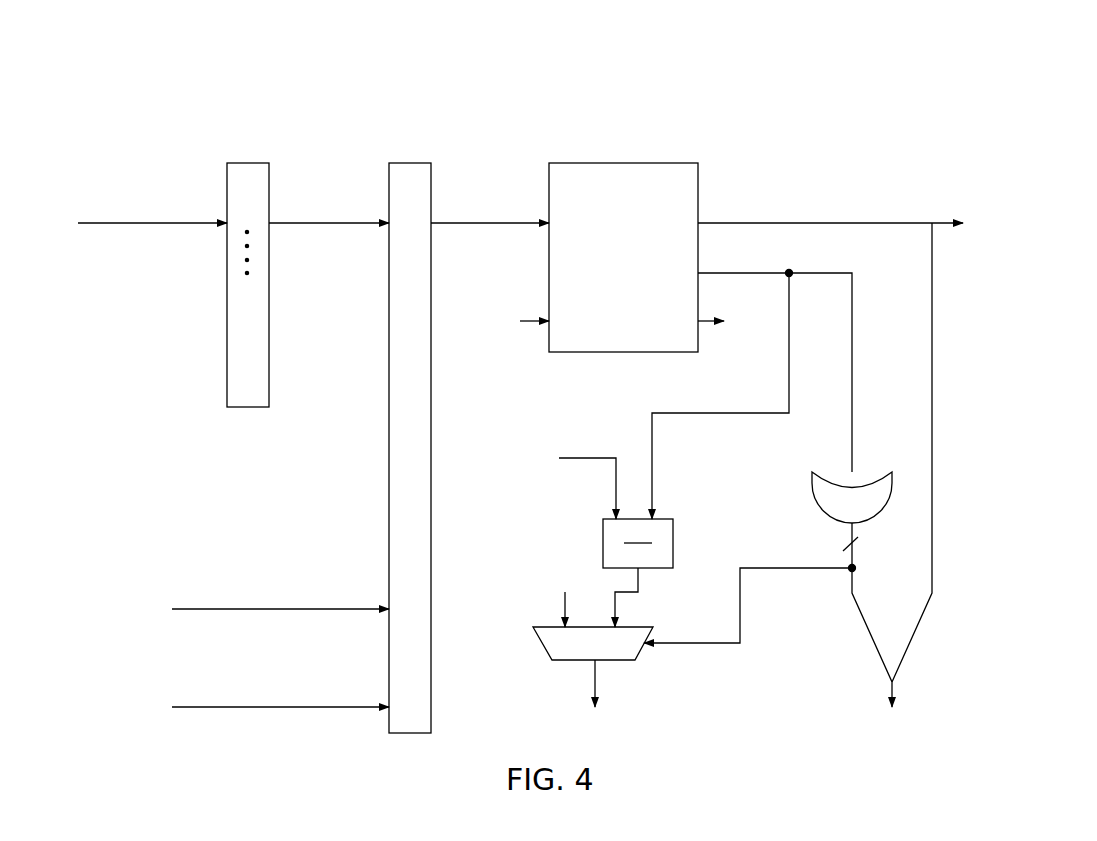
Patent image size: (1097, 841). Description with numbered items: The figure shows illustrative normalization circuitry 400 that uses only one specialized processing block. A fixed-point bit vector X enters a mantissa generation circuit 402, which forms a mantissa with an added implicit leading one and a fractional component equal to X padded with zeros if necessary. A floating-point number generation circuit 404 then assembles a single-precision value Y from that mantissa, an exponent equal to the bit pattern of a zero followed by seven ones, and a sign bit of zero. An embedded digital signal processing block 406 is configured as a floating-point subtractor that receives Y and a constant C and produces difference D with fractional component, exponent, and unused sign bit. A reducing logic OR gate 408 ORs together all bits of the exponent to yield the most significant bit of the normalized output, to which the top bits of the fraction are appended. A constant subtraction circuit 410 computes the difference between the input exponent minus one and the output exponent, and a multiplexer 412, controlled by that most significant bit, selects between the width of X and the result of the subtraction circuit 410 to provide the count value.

The normalization circuitry 400 is at (118, 122).
The mantissa generation circuit 402 is at (246, 163).
The floating-point number generation circuit 404 is at (411, 163).
The digital signal processing (DSP) block 406 is at (621, 163).
The logic OR gate 408 is at (812, 486).
The constant subtraction circuit 410 is at (673, 543).
The multiplexer 412 is at (540, 645).